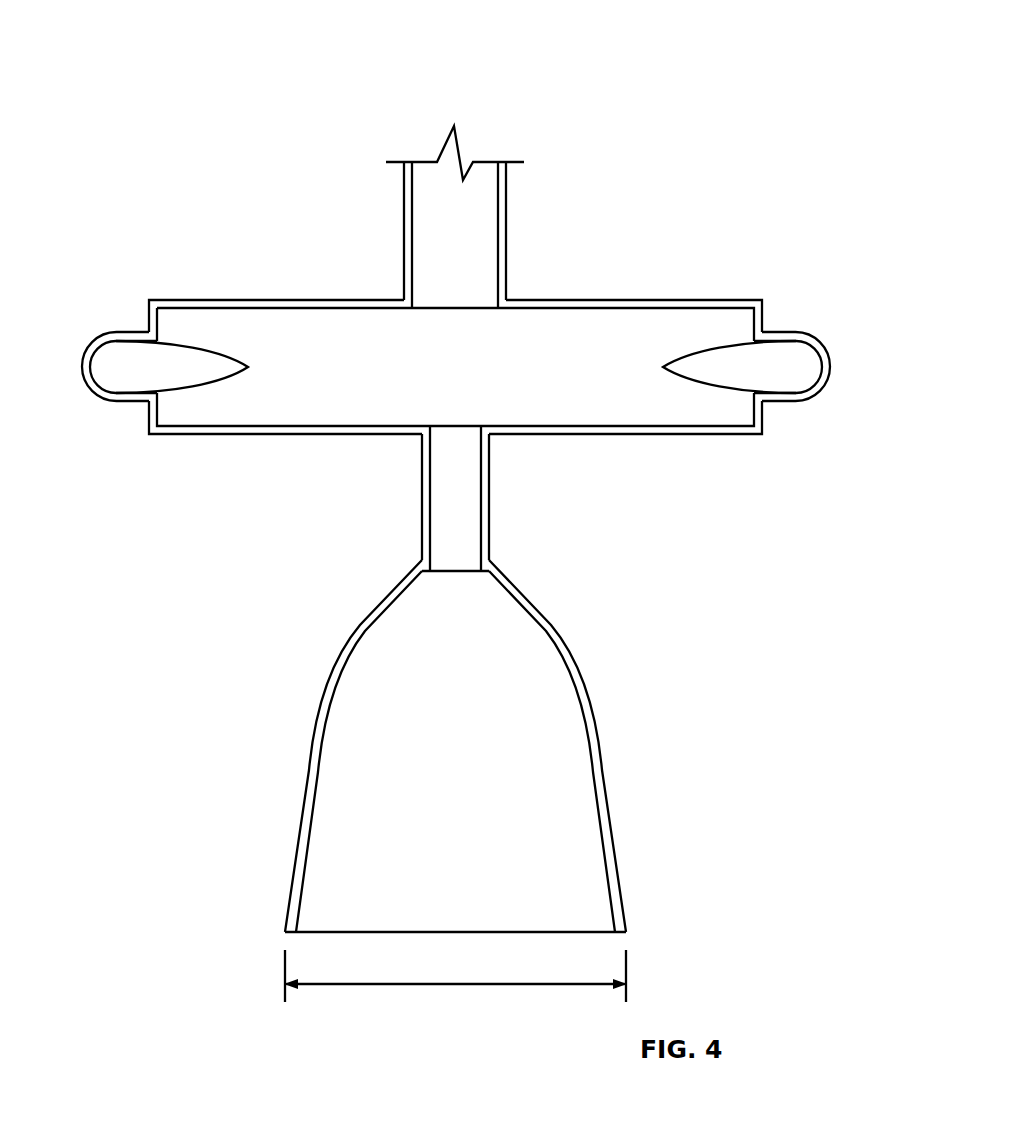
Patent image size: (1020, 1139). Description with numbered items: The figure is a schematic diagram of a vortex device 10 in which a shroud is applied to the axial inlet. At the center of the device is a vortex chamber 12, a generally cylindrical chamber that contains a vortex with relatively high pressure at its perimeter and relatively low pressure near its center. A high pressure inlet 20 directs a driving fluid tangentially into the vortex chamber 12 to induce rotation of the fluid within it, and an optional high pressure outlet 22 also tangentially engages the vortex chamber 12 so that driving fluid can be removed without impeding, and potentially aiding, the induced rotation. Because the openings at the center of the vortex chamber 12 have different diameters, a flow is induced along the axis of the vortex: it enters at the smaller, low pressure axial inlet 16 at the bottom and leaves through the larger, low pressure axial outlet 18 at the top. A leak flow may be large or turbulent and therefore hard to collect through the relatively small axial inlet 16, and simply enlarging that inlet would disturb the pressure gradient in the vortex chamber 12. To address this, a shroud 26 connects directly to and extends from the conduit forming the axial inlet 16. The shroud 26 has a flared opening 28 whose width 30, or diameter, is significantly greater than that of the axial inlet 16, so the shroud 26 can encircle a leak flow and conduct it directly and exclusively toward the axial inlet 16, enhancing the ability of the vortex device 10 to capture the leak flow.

The vortex device 10 is at (522, 76).
The vortex chamber 12 is at (584, 296).
The axial inlet 16 is at (494, 502).
The axial outlet 18 is at (399, 237).
The high pressure inlet 20 is at (78, 368).
The high pressure outlet 22 is at (836, 365).
The shroud 26 is at (480, 770).
The flared opening 28 is at (496, 936).
The width 30 is at (455, 986).